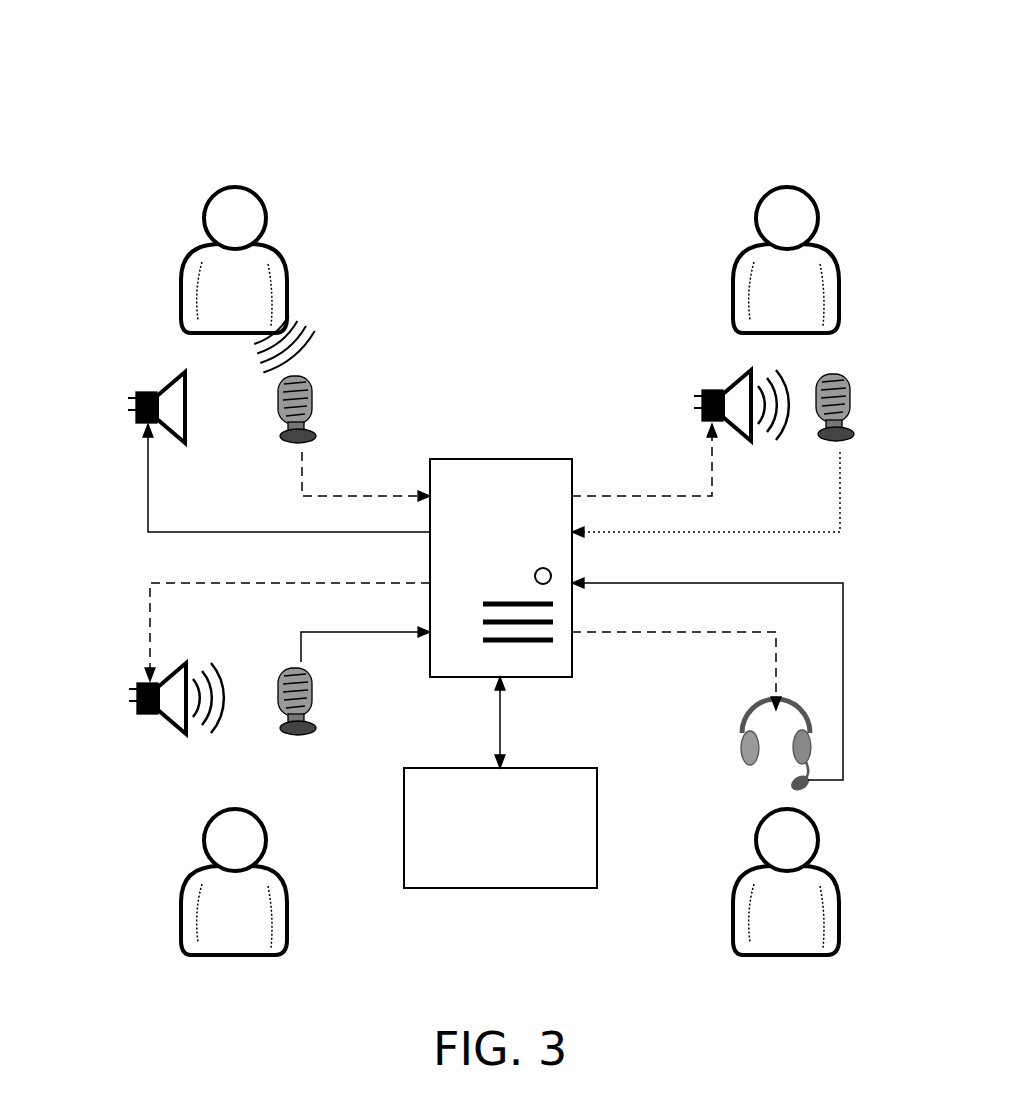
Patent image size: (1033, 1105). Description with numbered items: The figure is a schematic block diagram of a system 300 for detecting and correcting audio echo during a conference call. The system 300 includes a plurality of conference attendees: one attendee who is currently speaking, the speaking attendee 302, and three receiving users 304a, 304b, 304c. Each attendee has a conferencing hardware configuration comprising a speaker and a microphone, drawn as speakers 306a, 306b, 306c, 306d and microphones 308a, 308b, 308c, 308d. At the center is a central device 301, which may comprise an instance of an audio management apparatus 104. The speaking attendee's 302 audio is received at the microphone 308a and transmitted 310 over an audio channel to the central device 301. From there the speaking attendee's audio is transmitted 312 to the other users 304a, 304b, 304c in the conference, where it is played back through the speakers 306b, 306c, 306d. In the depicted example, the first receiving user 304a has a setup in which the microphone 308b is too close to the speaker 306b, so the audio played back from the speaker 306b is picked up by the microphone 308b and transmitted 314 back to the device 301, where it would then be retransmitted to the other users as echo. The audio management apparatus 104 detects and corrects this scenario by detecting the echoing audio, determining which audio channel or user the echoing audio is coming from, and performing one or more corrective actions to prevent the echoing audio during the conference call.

The system 300 is at (82, 60).
The central device 301 is at (501, 568).
The audio management apparatus 104 is at (500, 782).
The speaking attendee 302 is at (212, 182).
The first receiving user 304a is at (763, 184).
The receiving user 304b is at (212, 804).
The receiving user 304c is at (763, 804).
The speaker 306a is at (127, 399).
The speaker 306b is at (692, 398).
The speaker 306c is at (127, 689).
The speaker 306d is at (732, 737).
The microphone 308a is at (312, 392).
The microphone 308b is at (850, 392).
The microphone 308c is at (312, 686).
The microphone 308d is at (806, 792).
The transmission of speaking attendee's audio 310 is at (302, 486).
The transmission to receiving users 312 is at (712, 474).
The echo transmission 314 is at (840, 505).